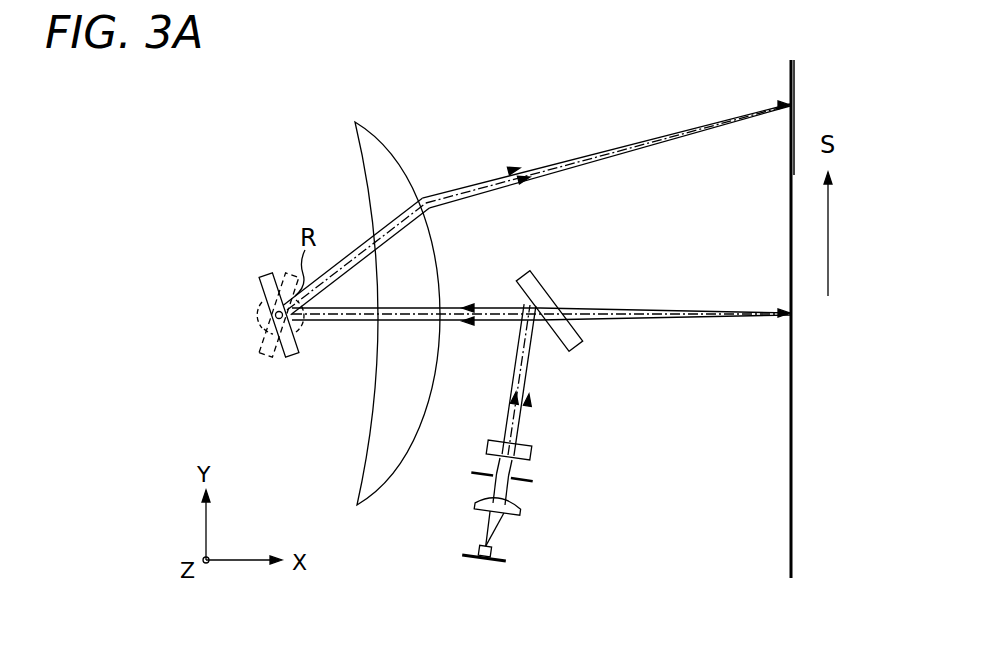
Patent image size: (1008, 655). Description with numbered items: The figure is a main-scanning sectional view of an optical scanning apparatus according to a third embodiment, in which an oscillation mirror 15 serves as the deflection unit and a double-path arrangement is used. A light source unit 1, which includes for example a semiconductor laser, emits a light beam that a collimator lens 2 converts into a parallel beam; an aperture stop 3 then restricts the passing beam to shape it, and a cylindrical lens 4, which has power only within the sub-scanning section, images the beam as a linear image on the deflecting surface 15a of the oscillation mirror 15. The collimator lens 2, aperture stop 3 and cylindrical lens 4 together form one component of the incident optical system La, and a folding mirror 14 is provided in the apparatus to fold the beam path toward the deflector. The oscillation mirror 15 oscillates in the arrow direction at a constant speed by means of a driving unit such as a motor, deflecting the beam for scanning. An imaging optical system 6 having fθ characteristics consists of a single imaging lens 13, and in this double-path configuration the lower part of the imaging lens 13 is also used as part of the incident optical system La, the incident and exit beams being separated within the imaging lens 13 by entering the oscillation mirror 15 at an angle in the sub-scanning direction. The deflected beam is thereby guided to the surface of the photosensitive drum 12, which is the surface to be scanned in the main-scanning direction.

The light source unit 1 is at (492, 556).
The collimator lens 2 is at (520, 516).
The aperture stop 3 is at (533, 484).
The cylindrical lens 4 is at (532, 452).
The imaging optical system 6 is at (376, 266).
The photosensitive drum 12 is at (795, 78).
The imaging lens 13 is at (377, 146).
The folding mirror 14 is at (540, 298).
The oscillation mirror 15 is at (293, 320).
The deflecting surface 15a is at (297, 342).
The incident optical system La is at (547, 488).